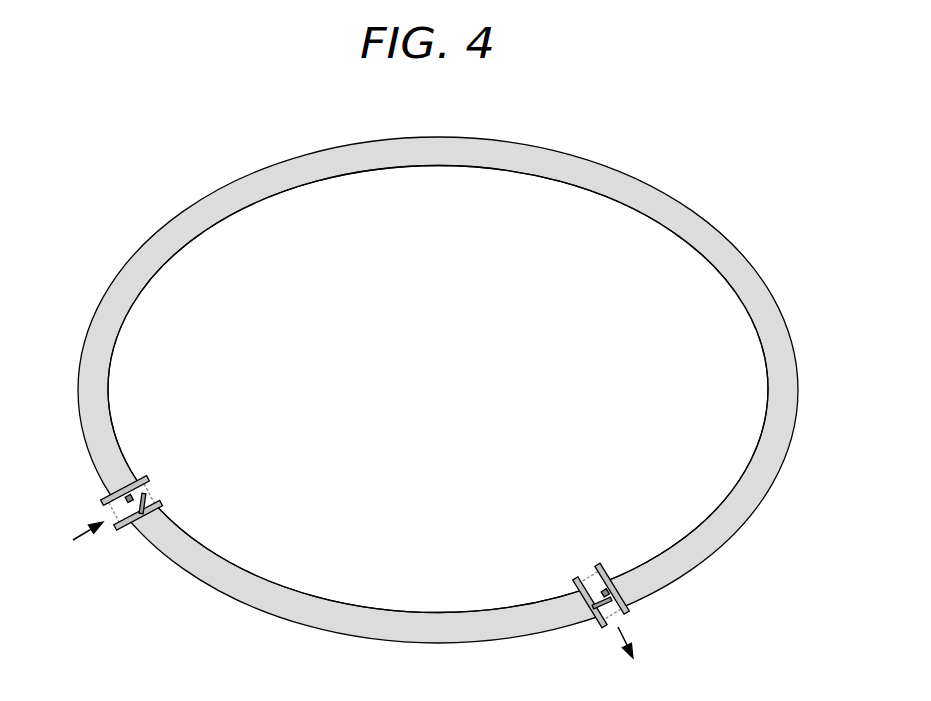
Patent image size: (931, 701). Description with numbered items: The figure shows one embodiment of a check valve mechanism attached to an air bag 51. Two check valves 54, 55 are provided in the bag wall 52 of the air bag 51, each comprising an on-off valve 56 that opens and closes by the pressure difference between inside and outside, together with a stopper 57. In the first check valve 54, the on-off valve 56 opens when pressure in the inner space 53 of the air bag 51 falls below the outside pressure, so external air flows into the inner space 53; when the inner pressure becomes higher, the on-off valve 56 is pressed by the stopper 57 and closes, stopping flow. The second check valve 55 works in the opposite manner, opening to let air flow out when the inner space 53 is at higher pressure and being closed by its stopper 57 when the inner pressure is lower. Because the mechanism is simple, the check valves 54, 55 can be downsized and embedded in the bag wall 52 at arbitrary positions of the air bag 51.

The air bag 51 is at (439, 408).
The bag wall 52 is at (702, 238).
The inner space 53 is at (205, 265).
The check valve 54 is at (135, 532).
The check valve 55 is at (597, 624).
The on-off valve 56 is at (157, 492).
The stopper 57 is at (148, 487).